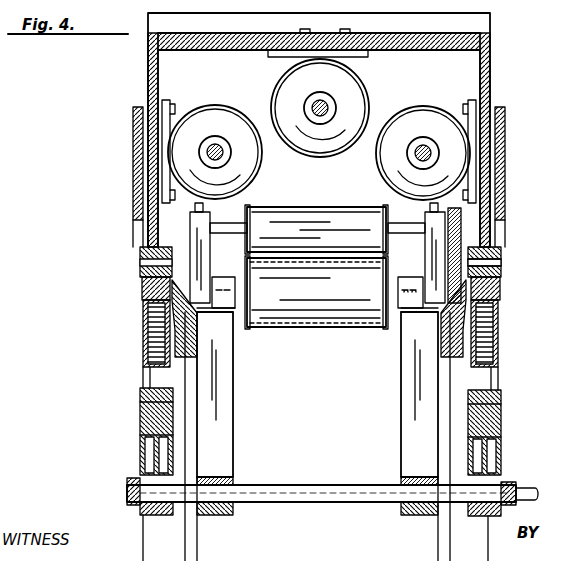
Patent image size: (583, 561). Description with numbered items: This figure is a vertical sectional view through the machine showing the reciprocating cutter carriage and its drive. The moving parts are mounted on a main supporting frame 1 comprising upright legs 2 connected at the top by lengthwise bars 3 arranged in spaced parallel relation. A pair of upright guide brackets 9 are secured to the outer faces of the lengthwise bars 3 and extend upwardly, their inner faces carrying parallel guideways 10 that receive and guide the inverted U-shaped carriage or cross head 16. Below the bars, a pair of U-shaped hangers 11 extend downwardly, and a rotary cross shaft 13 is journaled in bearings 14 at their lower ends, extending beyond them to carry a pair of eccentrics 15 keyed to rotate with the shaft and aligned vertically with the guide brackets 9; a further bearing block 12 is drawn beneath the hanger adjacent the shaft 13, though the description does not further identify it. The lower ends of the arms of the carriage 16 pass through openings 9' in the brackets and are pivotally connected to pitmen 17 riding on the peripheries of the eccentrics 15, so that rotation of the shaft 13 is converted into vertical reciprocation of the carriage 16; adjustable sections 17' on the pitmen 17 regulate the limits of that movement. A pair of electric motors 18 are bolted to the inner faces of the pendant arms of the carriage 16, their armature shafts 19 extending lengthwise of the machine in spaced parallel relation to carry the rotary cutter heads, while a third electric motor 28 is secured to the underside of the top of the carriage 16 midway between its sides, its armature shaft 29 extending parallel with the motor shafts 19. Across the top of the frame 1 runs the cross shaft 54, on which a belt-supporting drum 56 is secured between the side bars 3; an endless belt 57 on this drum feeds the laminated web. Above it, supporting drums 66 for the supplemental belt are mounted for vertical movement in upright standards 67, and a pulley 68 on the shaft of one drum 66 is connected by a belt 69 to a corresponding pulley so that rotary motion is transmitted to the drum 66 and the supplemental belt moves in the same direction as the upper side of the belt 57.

The main supporting frame 1 is at (196, 370).
The upright legs 2 is at (150, 551).
The lengthwise bars 3 is at (214, 313).
The upright guide brackets 9 is at (317, 173).
The openings 9' is at (317, 256).
The guideways 10 is at (148, 232).
The U-shaped hangers 11 is at (228, 418).
The bearing block 12 is at (211, 516).
The rotary cross shaft 13 is at (318, 490).
The bearings 14 is at (418, 516).
The eccentrics 15 is at (155, 453).
The carriage or cross head 16 is at (486, 40).
The pitmen 17 is at (322, 333).
The adjustable sections 17' is at (319, 317).
The electric motors 18 is at (208, 114).
The armature shafts 19 is at (207, 152).
The third electric motor 28 is at (319, 154).
The armature shaft 29 is at (320, 96).
The cross shaft 54 is at (400, 318).
The belt-supporting drum 56 is at (316, 292).
The endless belt 57 is at (354, 322).
The supporting drums 66 is at (333, 210).
The upright standards 67 is at (205, 250).
The pulley 68 is at (462, 214).
The belt 69 is at (471, 260).